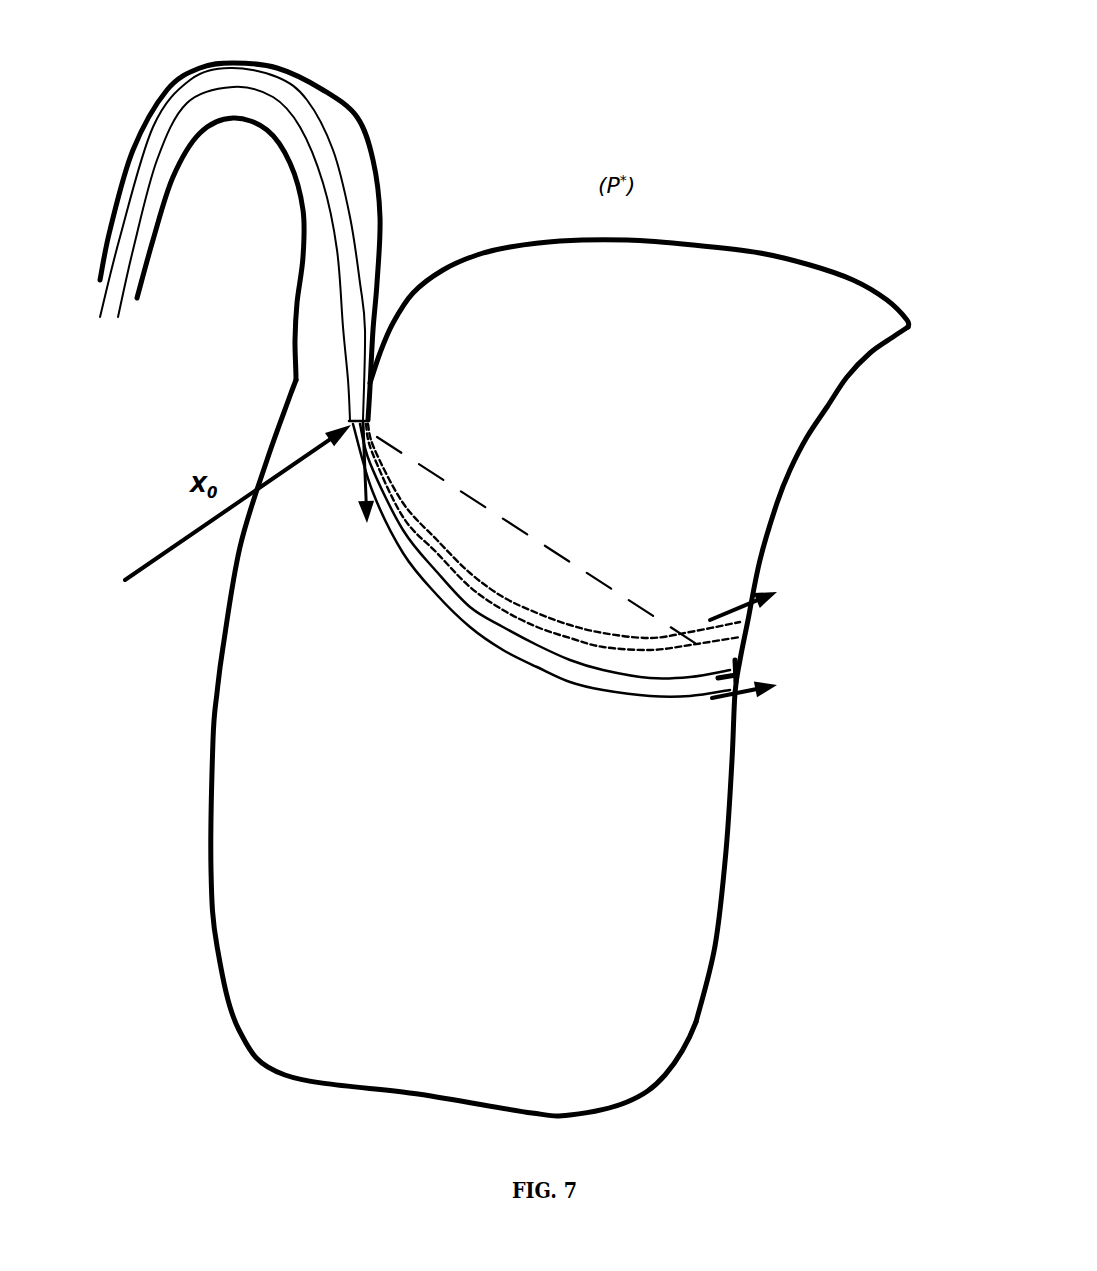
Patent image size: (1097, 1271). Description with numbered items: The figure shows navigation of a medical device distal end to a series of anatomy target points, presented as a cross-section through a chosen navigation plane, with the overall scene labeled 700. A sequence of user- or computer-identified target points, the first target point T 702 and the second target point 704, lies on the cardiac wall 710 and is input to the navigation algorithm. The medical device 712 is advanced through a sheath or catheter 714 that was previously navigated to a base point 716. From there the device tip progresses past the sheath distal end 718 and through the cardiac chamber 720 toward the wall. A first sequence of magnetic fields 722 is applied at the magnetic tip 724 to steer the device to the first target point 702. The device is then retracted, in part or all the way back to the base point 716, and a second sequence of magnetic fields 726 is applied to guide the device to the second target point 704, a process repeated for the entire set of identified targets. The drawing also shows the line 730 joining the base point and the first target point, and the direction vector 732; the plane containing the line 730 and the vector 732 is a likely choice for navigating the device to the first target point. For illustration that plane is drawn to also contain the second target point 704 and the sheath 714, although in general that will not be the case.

The pouring scene 700 is at (686, 150).
The first target point T 702 is at (737, 670).
The second target point 704 is at (748, 623).
The cardiac wall 710 is at (730, 851).
The medical device 712 is at (547, 675).
The sheath 714 is at (340, 157).
The base point X0 716 is at (350, 440).
The sheath distal end 718 is at (367, 423).
The cardiac chamber 720 is at (300, 645).
The first sequence of magnetic fields B1(t) 722 is at (726, 699).
The magnetic tip 724 is at (733, 673).
The second sequence of magnetic fields B2(t) 726 is at (733, 608).
The line (D) 730 is at (543, 542).
The u 732 is at (357, 490).